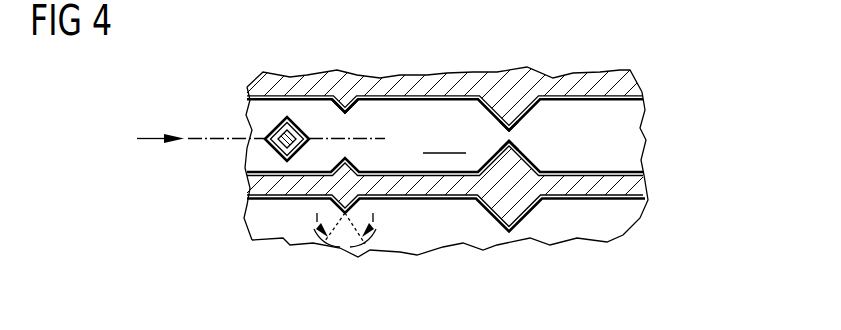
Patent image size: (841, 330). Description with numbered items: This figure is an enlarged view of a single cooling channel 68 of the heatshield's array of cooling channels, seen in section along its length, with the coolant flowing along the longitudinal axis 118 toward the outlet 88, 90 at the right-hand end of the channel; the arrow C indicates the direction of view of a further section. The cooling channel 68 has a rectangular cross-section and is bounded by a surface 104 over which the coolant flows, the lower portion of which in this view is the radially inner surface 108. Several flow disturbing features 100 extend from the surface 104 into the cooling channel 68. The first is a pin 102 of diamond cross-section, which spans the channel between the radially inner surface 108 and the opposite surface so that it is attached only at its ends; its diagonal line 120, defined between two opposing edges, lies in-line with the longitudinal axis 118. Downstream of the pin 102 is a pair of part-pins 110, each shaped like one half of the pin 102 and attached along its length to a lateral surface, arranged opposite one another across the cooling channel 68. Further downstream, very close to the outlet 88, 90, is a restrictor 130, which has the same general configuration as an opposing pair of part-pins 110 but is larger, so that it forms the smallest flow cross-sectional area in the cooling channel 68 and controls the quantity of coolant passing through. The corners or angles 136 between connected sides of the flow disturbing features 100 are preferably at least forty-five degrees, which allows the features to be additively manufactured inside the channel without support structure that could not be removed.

The cooling channel 68 is at (238, 62).
The flow disturbing feature 100 is at (294, 132).
The pin 102 is at (262, 172).
The surface 104 is at (414, 99).
The radially inner surface 108 is at (444, 140).
The part-pin 110 is at (351, 113).
The longitudinal axis 118 is at (196, 137).
The diagonal line 120 is at (270, 147).
The restrictor 130 is at (512, 137).
The corners or angles 136 is at (347, 248).
The outlet 88 is at (685, 163).
The outlet 90 is at (645, 136).
The viewing direction C is at (147, 136).